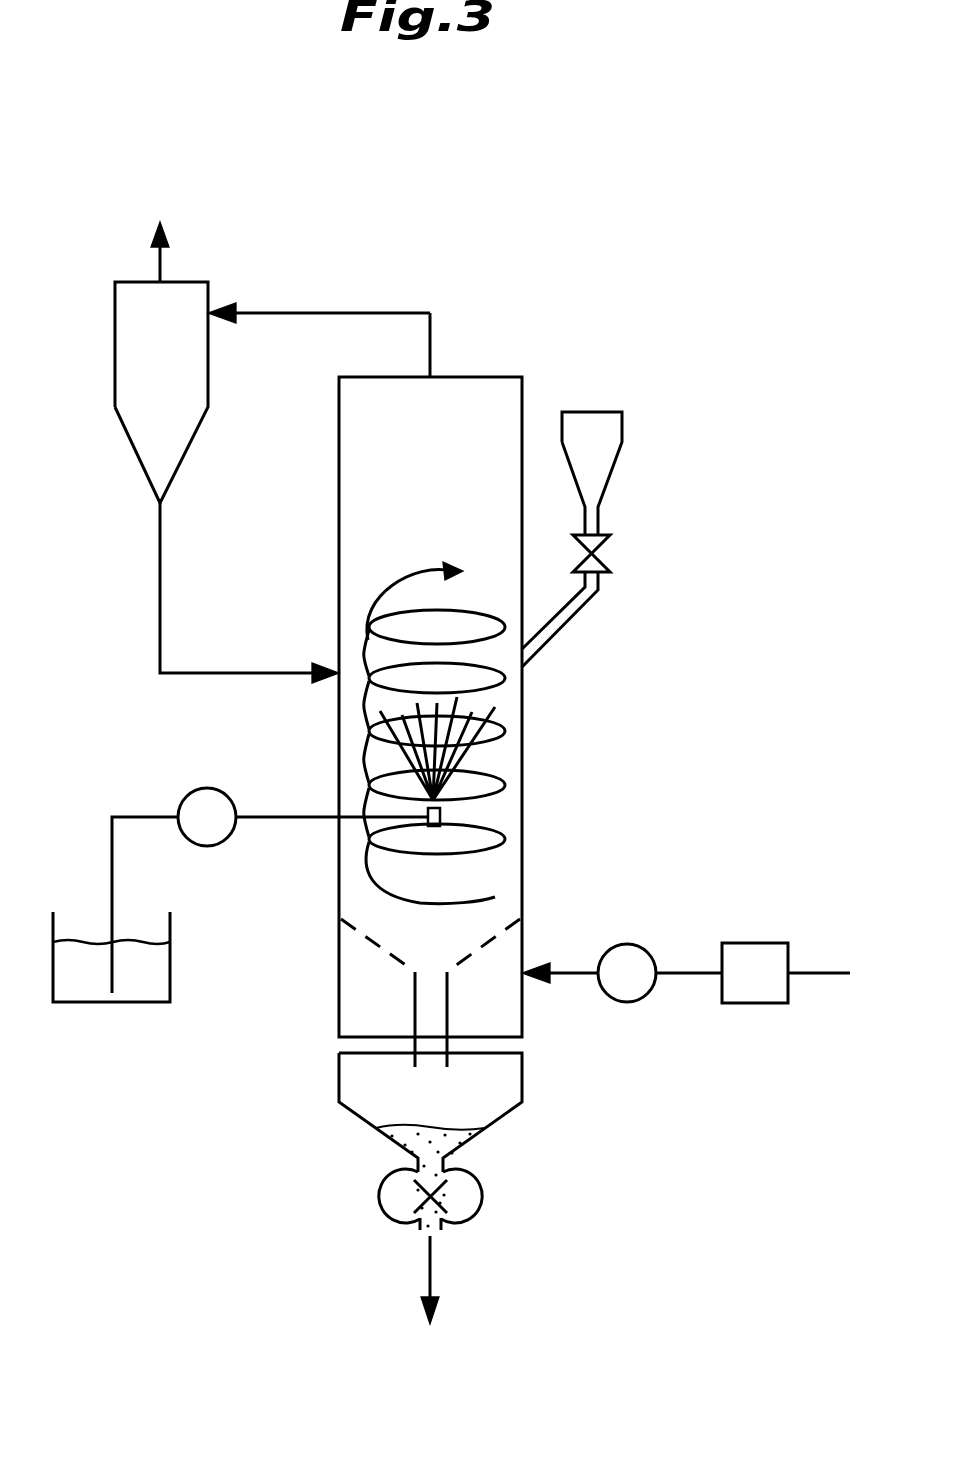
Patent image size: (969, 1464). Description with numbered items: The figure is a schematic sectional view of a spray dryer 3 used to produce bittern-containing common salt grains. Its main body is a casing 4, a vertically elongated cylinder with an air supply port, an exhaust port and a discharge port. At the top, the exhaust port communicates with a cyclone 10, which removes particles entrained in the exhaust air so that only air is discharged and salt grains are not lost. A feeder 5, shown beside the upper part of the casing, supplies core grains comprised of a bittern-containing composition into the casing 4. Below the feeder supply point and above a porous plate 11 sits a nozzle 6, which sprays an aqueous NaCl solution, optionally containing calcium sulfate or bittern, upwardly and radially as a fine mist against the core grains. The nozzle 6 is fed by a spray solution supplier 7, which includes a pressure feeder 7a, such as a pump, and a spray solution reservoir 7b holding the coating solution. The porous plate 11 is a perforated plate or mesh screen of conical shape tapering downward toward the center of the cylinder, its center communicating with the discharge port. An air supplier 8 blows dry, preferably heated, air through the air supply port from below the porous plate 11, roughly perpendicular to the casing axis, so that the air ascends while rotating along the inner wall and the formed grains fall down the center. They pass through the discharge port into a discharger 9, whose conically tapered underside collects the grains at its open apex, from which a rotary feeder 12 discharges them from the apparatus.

The spray dryer 3 is at (593, 192).
The casing 4 is at (522, 708).
The feeder 5 is at (622, 425).
The nozzle 6 is at (443, 807).
The spray solution supplier 7 is at (62, 810).
The pressure feeder 7a is at (180, 802).
The spray solution reservoir 7b is at (80, 983).
The air supplier 8 is at (777, 910).
The discharger 9 is at (563, 1085).
The cyclone 10 is at (115, 343).
The porous plate 11 is at (500, 945).
The rotary feeder 12 is at (458, 1184).